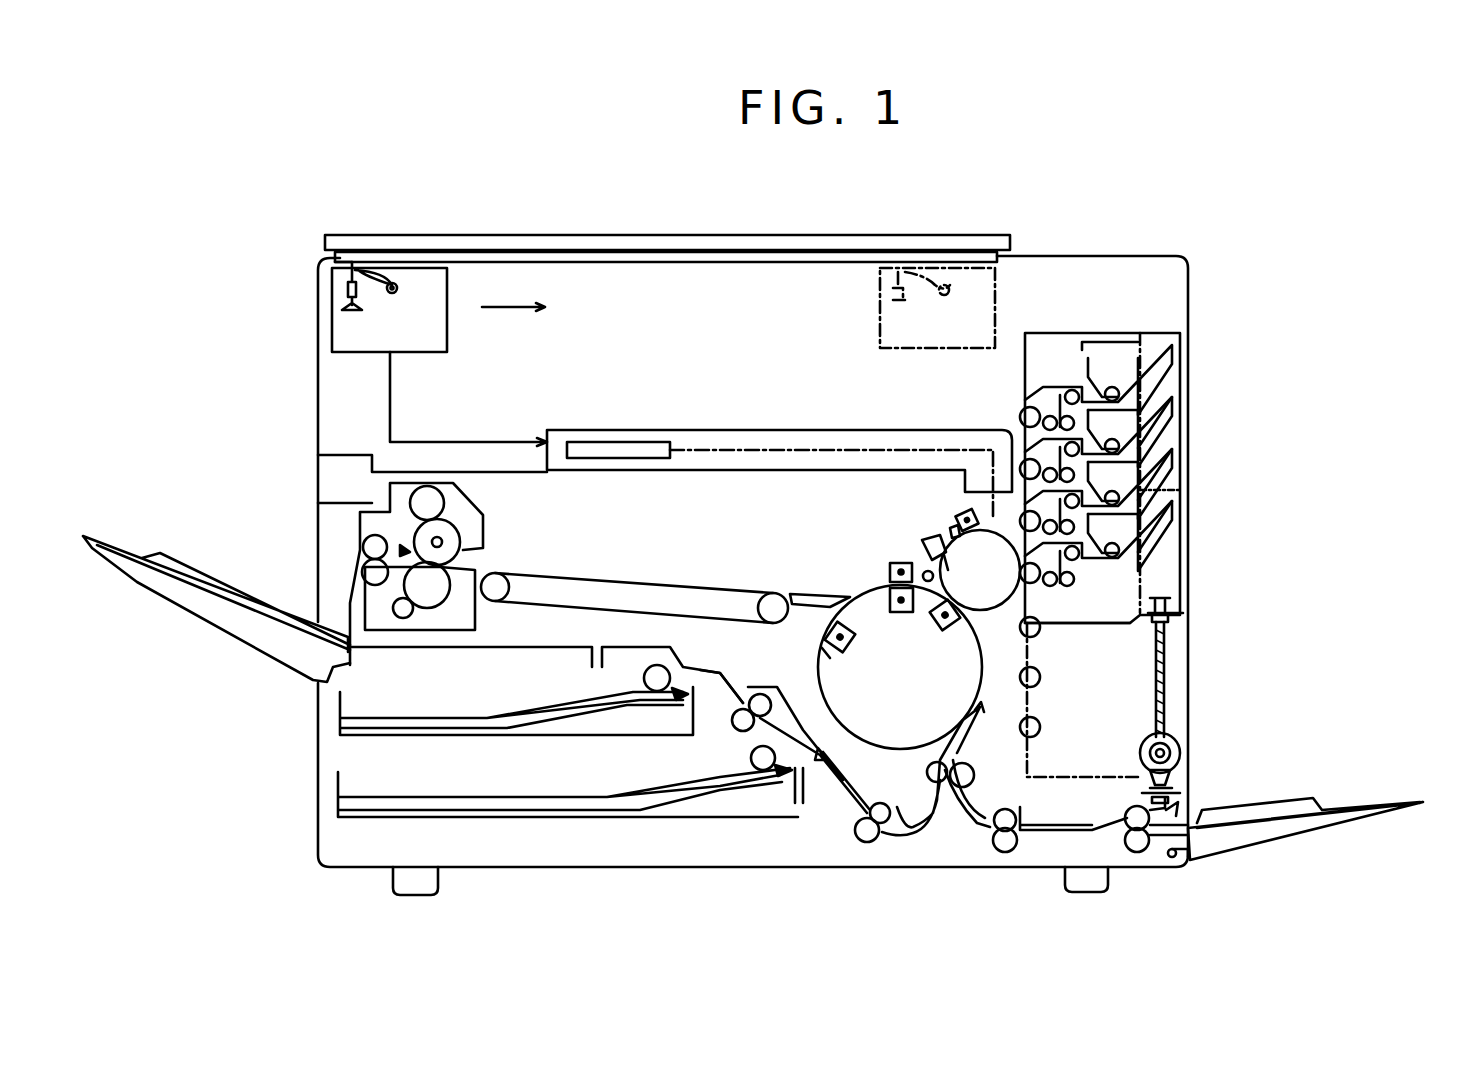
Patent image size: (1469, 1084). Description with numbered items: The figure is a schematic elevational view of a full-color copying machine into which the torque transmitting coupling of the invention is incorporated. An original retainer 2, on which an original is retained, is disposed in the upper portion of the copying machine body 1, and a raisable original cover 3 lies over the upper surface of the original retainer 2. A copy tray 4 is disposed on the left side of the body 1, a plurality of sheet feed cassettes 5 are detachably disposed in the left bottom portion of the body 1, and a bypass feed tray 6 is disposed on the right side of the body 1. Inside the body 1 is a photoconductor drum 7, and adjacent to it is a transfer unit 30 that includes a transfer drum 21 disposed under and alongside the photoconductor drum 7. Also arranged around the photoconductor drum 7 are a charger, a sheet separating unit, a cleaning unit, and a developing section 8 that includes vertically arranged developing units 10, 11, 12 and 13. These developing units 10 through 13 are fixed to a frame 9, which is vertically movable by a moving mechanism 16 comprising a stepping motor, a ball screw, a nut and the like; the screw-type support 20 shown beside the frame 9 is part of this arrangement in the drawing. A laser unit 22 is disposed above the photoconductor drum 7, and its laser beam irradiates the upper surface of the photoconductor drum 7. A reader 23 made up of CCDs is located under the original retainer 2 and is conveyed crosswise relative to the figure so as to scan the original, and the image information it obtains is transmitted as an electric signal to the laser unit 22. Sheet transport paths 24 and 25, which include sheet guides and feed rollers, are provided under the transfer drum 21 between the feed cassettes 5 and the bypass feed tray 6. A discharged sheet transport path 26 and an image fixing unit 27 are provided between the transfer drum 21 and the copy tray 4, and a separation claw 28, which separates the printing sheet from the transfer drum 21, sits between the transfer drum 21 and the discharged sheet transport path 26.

The copying machine body 1 is at (320, 318).
The original retainer 2 is at (703, 260).
The original cover 3 is at (606, 244).
The copy tray 4 is at (85, 535).
The sheet feed cassettes 5 is at (338, 780).
The bypass feed tray 6 is at (1358, 810).
The photoconductor drum 7 is at (940, 537).
The developing section 8 is at (1098, 326).
The frame 9 is at (1112, 622).
The developing unit 10 is at (1183, 338).
The developing unit 11 is at (1172, 393).
The developing unit 12 is at (1165, 437).
The developing unit 13 is at (1172, 482).
The moving mechanism 16 is at (1173, 697).
The screw support 20 is at (1187, 625).
The transfer drum 21 is at (823, 662).
The laser unit 22 is at (722, 430).
The reader 23 is at (447, 338).
The sheet transport path 24 is at (838, 830).
The sheet transport path 25 is at (1038, 856).
The discharged sheet transport path 26 is at (680, 578).
The image fixing unit 27 is at (485, 530).
The separation claw 28 is at (808, 592).
The transfer unit 30 is at (866, 558).